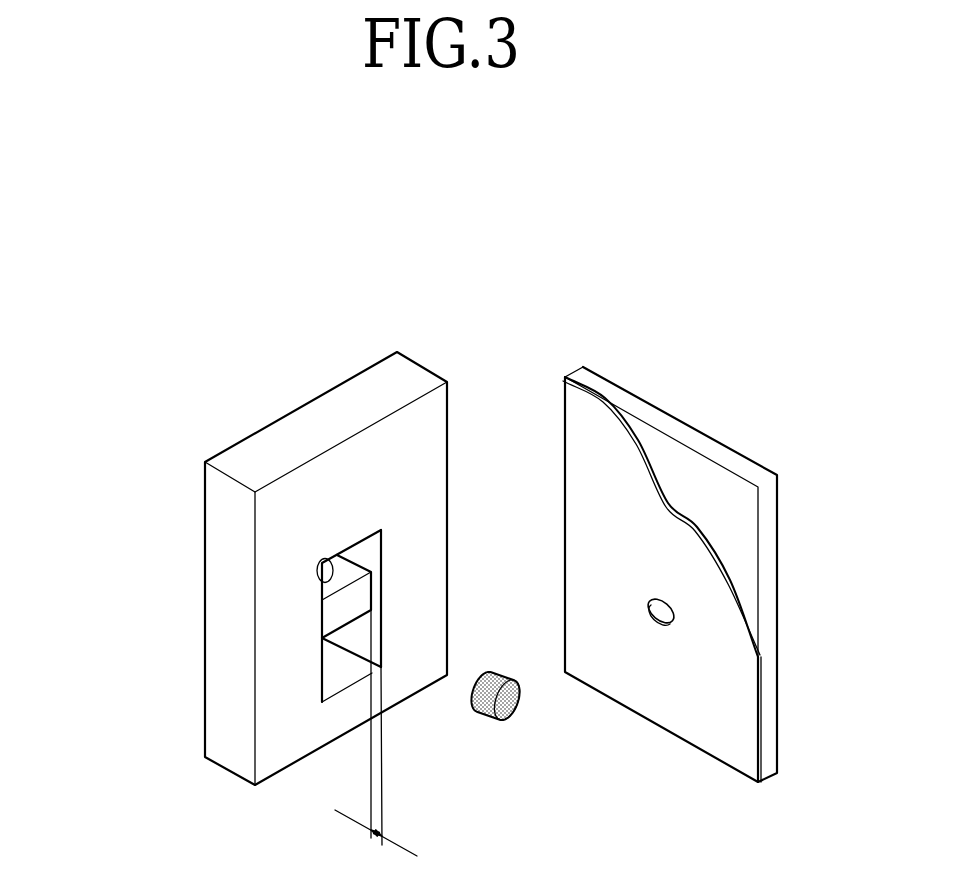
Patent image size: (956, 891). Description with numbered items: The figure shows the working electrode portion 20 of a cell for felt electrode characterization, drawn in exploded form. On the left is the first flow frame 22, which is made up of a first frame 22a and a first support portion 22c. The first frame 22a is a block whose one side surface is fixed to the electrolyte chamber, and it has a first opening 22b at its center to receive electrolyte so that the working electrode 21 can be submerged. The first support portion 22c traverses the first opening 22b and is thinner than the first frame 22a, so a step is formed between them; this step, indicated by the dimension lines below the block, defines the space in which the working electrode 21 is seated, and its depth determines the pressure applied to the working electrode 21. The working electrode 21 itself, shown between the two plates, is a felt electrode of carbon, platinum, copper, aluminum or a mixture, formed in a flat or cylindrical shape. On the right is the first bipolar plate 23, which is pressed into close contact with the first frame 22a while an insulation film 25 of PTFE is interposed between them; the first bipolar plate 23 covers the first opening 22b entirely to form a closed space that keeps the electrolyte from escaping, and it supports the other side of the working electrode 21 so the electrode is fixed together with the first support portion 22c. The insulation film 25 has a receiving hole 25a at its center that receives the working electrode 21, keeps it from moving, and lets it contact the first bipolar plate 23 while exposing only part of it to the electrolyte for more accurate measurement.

The working electrode portion 20 is at (587, 273).
The working electrode 21 is at (483, 717).
The first flow frame 22 is at (112, 487).
The first frame 22a is at (205, 513).
The first opening 22b is at (323, 557).
The first support portion 22c is at (330, 619).
The first bipolar plate 23 is at (678, 428).
The insulation film 25 is at (690, 522).
The receiving hole 25a is at (650, 607).